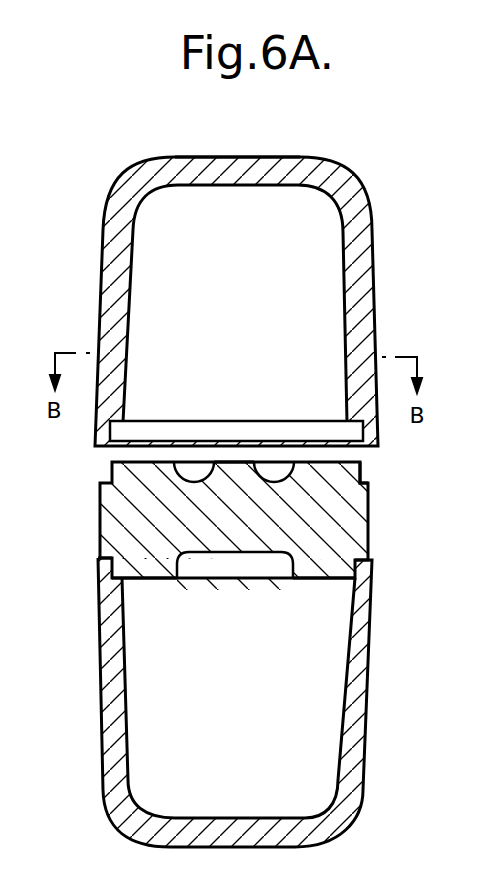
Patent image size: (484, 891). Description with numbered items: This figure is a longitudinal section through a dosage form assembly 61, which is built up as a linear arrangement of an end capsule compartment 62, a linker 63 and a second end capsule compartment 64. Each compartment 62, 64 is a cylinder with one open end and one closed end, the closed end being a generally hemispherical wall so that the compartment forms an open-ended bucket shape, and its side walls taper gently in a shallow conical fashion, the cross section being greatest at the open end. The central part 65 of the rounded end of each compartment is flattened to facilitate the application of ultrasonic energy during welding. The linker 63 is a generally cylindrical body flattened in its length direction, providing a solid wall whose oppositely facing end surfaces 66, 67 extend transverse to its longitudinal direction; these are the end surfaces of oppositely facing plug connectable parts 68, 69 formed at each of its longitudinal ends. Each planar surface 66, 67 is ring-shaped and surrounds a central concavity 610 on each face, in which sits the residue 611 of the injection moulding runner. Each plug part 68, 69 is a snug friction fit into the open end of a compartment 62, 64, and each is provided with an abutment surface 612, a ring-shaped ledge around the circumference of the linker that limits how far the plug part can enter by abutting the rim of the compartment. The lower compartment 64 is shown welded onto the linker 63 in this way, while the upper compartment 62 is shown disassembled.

The dosage form assembly 61 is at (86, 513).
The end capsule compartment 62 is at (362, 197).
The linker 63 is at (365, 522).
The end capsule compartment 64 is at (347, 818).
The central part 65 is at (257, 157).
The end surface 66 is at (313, 467).
The end surface 67 is at (310, 575).
The plug connectable part 68 is at (152, 465).
The plug connectable part 69 is at (153, 573).
The central concavity 610 is at (232, 560).
The residue of the injection moulding runner 611 is at (237, 465).
The abutment surface 612 is at (363, 480).